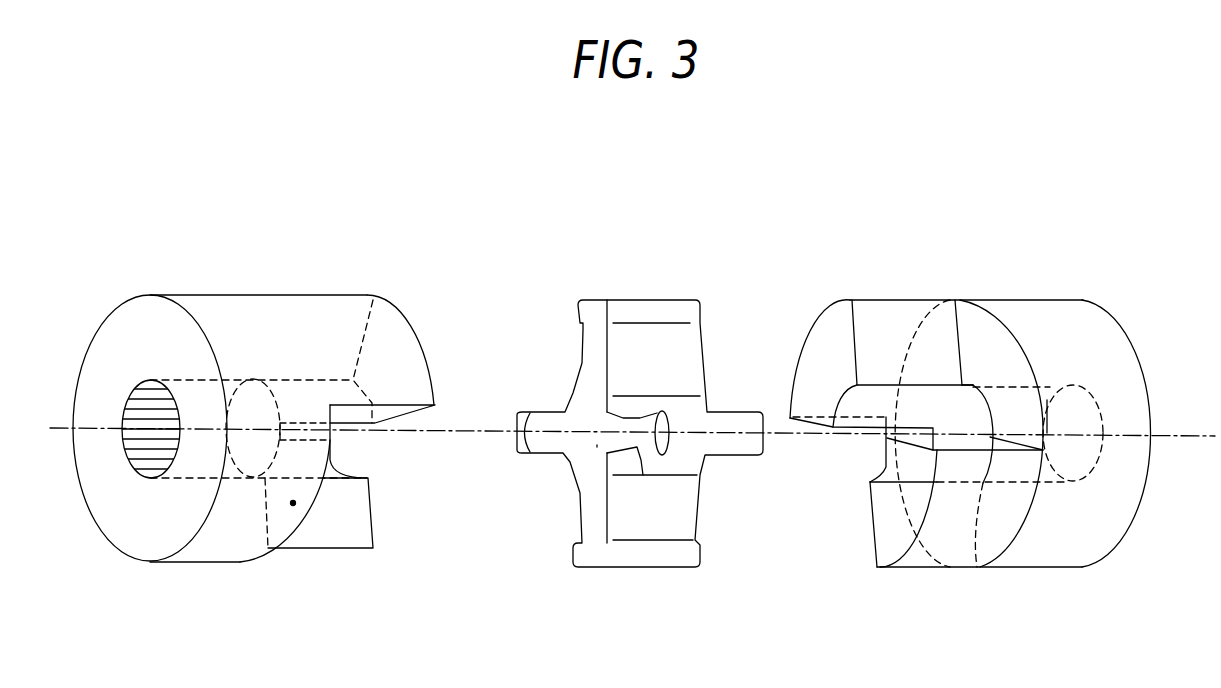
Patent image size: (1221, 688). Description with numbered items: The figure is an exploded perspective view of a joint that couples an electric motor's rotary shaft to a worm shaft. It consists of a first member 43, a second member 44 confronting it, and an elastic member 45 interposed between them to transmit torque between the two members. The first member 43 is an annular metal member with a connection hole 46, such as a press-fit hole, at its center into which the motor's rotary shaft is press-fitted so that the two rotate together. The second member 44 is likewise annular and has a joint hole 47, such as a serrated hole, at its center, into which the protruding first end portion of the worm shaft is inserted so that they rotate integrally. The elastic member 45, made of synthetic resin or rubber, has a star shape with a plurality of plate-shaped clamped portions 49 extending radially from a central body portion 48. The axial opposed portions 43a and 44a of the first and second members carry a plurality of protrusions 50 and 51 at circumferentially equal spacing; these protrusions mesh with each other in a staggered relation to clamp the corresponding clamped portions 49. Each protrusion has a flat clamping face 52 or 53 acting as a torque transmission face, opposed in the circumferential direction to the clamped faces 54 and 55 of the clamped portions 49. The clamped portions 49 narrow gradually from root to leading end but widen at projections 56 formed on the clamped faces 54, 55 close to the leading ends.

The first member 43 is at (1068, 327).
The axial opposed portion of the first member 43a is at (1000, 348).
The second member 44 is at (268, 317).
The axial opposed portion of the second member 44a is at (293, 503).
The elastic member 45 is at (658, 284).
The connection hole 46 is at (1095, 468).
The joint hole 47 is at (150, 445).
The body portion 48 is at (597, 445).
The clamped portions 49 is at (597, 363).
The protrusions of the first member 50 is at (828, 365).
The protrusions of the second member 51 is at (393, 342).
The clamping faces 52 is at (893, 323).
The clamping faces 53 is at (357, 413).
The clamped faces 54 is at (582, 337).
The clamped faces 55 is at (655, 357).
The projections 56 is at (578, 307).